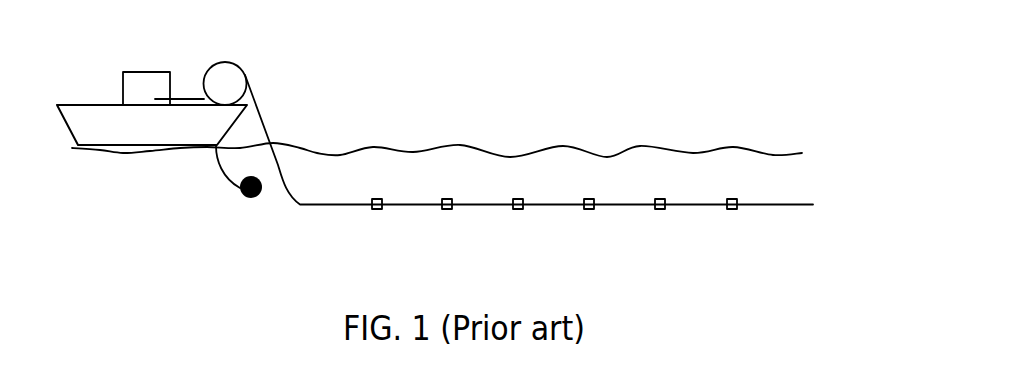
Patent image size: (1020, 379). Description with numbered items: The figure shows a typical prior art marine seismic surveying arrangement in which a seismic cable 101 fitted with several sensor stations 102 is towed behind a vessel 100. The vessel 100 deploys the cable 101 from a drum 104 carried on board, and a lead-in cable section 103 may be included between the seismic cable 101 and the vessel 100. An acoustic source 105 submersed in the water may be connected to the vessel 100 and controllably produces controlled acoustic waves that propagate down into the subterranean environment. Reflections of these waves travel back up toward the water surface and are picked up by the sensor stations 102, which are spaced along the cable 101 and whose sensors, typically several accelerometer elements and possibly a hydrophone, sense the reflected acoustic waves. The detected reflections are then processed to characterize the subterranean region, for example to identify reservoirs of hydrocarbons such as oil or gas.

The vessel 100 is at (73, 104).
The seismic cable 101 is at (473, 176).
The sensor stations 102 is at (447, 198).
The lead-in cable section 103 is at (263, 113).
The drum 104 is at (207, 60).
The acoustic source 105 is at (240, 197).